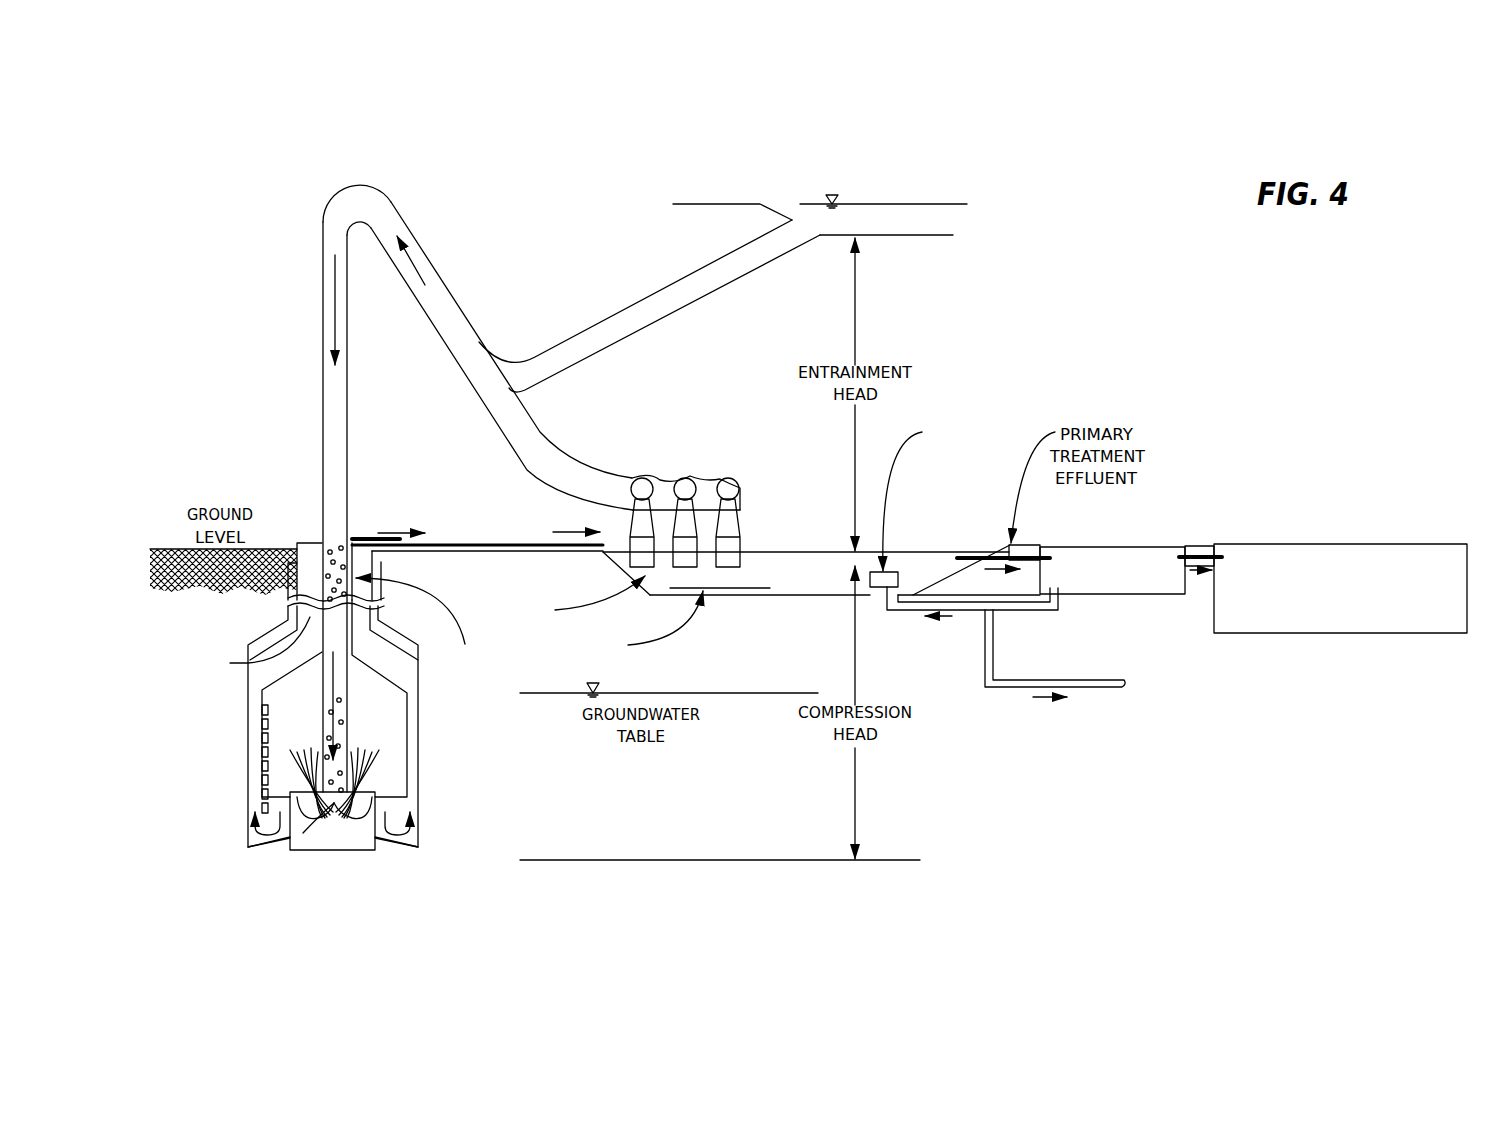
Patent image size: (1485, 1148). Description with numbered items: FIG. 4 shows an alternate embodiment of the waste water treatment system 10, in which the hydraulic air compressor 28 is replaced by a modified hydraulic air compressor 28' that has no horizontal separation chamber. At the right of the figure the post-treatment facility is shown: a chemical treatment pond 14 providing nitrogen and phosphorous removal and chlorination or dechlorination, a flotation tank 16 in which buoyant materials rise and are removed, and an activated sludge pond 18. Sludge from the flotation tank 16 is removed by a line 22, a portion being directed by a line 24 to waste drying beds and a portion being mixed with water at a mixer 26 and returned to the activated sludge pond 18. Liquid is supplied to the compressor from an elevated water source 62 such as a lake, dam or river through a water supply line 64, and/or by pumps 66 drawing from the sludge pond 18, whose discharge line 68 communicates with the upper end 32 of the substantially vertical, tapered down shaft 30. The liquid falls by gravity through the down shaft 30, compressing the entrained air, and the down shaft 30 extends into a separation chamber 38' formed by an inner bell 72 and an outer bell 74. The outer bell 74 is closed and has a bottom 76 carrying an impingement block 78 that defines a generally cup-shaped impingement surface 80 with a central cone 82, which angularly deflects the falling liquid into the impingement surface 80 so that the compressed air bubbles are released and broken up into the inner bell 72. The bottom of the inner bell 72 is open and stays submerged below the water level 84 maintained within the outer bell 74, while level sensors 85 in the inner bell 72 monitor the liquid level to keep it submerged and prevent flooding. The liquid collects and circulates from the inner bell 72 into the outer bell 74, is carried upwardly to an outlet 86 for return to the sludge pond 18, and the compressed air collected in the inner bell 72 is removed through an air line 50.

The system 10 is at (1052, 338).
The chemical treatment pond 14 is at (1344, 545).
The flotation tank 16 is at (1094, 546).
The activated sludge pond 18 is at (822, 551).
The line 22 is at (1197, 553).
The line 24 is at (985, 666).
The mixer 26 is at (873, 583).
The hydraulic air compressor 28 is at (535, 225).
The modified hydraulic air compressor 28' is at (244, 319).
The down shaft 30 is at (343, 417).
The upper end 32 is at (372, 197).
The separation chamber 38' is at (289, 726).
The air line 50 is at (365, 538).
The water source 62 is at (950, 205).
The water supply line 64 is at (648, 320).
The pumps 66 is at (643, 477).
The discharge line 68 is at (432, 283).
The inner bell 72 is at (273, 678).
The outer bell 74 is at (386, 637).
The bottom 76 is at (398, 848).
The impingement block 78 is at (328, 848).
The impingement surface 80 is at (305, 834).
The central cone 82 is at (334, 808).
The water level 84 is at (388, 797).
The level sensors 85 is at (258, 796).
The outlet 86 is at (484, 548).